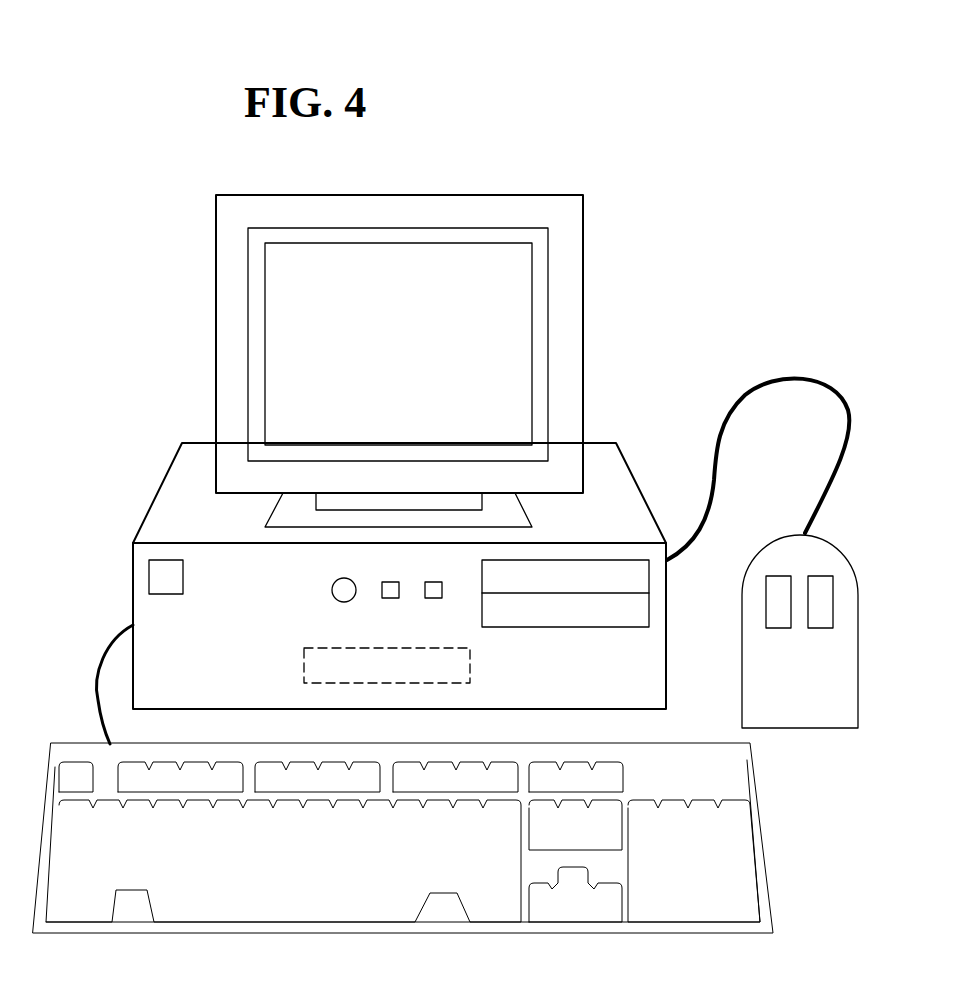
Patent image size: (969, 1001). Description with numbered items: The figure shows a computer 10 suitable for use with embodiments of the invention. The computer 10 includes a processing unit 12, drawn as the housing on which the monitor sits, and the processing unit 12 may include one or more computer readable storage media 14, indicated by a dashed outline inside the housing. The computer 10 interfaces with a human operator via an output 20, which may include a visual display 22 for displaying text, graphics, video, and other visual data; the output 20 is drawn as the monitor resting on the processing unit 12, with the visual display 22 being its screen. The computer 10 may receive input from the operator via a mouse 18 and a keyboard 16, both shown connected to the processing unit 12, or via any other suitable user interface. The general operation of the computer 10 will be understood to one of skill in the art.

The computer 10 is at (663, 63).
The processing unit 12 is at (666, 625).
The computer readable storage media 14 is at (470, 665).
The keyboard 16 is at (765, 910).
The mouse 18 is at (858, 630).
The output 20 is at (583, 342).
The visual display 22 is at (400, 343).